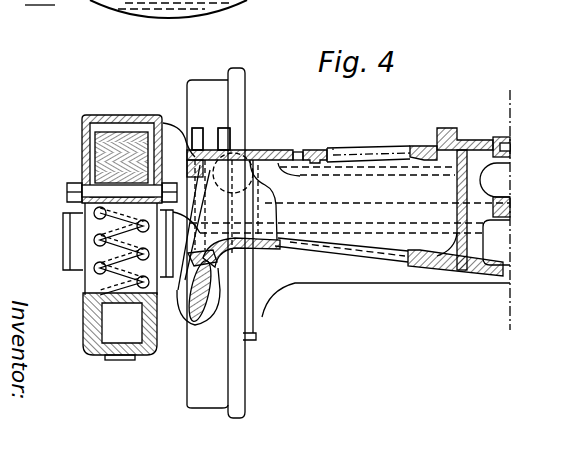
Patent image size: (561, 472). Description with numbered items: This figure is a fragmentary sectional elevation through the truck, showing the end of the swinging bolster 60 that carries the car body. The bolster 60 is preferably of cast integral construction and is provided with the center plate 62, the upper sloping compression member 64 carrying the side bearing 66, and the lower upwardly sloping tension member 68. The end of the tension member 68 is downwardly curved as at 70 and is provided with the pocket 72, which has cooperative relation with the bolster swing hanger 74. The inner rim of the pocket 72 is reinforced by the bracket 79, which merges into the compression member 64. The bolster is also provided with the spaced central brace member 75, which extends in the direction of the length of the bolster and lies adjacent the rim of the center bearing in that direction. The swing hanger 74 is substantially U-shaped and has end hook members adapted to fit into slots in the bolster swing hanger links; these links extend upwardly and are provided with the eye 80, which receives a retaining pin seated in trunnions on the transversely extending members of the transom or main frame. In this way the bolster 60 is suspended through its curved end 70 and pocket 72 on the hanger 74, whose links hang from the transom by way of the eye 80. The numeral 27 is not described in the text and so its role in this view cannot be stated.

The conical body wall 27 is at (280, 245).
The swinging bolster 60 is at (418, 147).
The center plate 62 is at (452, 138).
The upper sloping compression member 64 is at (323, 149).
The side bearing 66 is at (252, 152).
The lower upwardly sloping tension member 68 is at (412, 264).
The downwardly curved end 70 is at (230, 238).
The pocket 72 is at (217, 262).
The bolster swing hanger 74 is at (180, 307).
The spaced central brace member 75 is at (476, 250).
The bracket 79 is at (224, 256).
The eye 80 is at (268, 158).